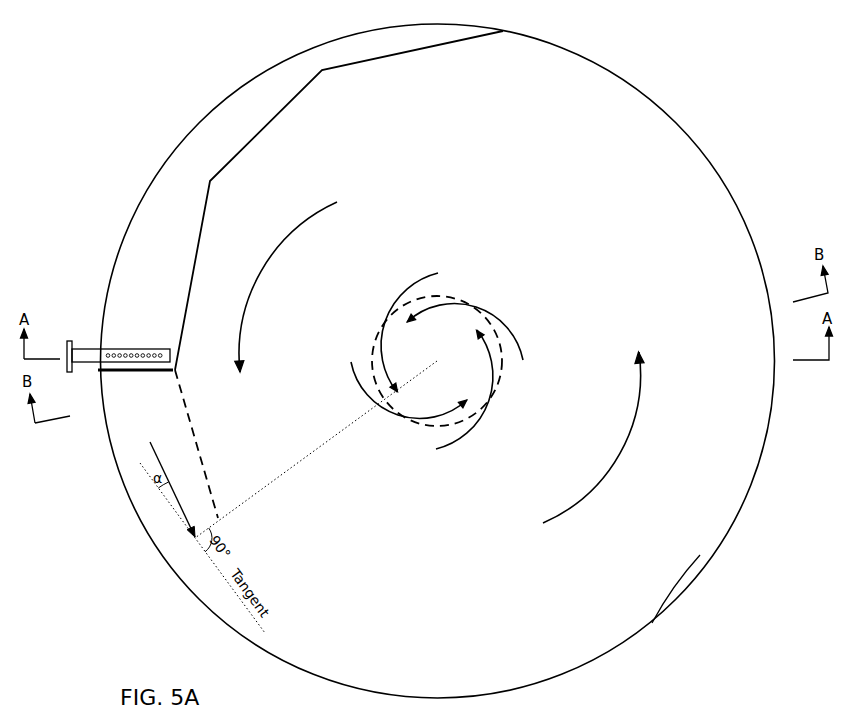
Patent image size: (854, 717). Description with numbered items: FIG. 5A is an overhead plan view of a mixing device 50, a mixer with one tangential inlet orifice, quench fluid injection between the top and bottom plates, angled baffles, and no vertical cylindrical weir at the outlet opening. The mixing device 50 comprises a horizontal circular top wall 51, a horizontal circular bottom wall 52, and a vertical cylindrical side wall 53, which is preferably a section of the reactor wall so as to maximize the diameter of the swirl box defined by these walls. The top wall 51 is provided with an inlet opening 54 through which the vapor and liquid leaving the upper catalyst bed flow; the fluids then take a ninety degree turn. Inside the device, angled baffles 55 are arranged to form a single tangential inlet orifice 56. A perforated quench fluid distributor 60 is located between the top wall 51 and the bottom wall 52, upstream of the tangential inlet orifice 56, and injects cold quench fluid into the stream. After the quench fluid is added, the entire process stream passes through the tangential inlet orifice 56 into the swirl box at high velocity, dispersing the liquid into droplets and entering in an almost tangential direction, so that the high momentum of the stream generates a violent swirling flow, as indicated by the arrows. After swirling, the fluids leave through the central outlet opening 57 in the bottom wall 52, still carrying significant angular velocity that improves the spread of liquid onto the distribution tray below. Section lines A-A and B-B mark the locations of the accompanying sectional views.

The mixing device 50 is at (716, 106).
The horizontal circular top wall 51 is at (423, 563).
The horizontal circular bottom wall 52 is at (197, 185).
The vertical cylindrical side wall 53 is at (652, 623).
The inlet opening 54 is at (157, 237).
The angled baffles 55 is at (205, 218).
The tangential inlet orifice 56 is at (155, 516).
The central outlet opening 57 is at (443, 335).
The perforated quench fluid distributor 60 is at (124, 349).